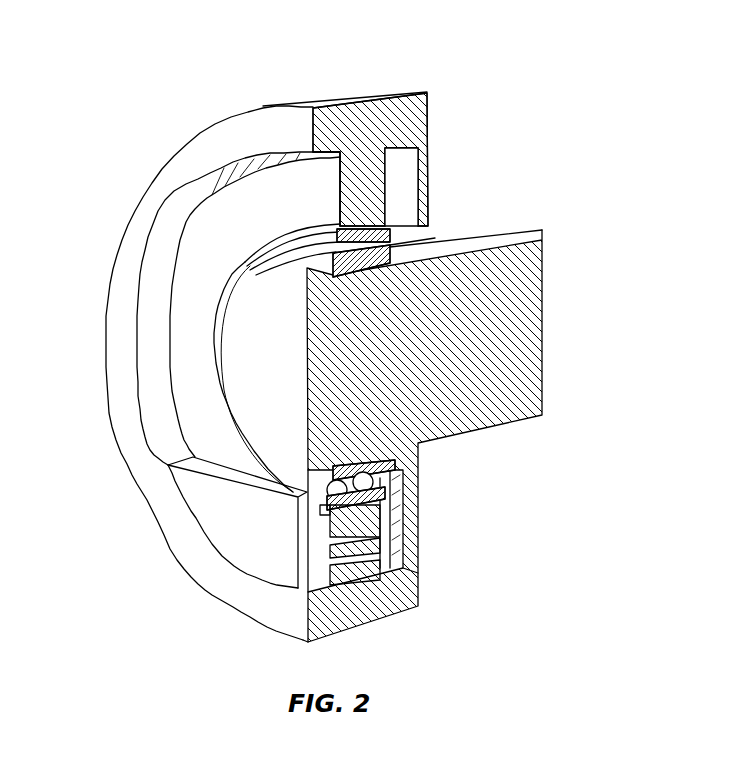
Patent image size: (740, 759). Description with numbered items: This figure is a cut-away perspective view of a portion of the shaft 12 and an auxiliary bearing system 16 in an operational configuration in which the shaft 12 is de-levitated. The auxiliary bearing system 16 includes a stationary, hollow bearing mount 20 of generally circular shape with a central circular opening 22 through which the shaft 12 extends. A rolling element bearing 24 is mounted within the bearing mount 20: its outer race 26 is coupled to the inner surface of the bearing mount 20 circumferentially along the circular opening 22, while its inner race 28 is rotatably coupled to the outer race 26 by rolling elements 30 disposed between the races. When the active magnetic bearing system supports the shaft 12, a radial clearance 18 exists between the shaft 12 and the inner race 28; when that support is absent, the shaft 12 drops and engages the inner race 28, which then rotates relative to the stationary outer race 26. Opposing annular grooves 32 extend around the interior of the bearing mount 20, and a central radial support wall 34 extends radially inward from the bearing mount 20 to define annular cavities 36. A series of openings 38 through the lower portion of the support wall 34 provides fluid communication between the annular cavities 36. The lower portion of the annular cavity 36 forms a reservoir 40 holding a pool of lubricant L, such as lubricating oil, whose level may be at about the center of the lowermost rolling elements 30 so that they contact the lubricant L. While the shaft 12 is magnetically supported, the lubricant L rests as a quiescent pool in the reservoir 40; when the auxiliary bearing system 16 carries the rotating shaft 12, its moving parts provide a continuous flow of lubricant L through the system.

The shaft 12 is at (545, 323).
The auxiliary bearing system 16 is at (565, 68).
The radial clearance 18 is at (365, 262).
The bearing mount 20 is at (250, 108).
The central circular opening 22 is at (278, 238).
The rolling element bearing 24 is at (424, 240).
The outer race 26 is at (382, 490).
The inner race 28 is at (395, 495).
The rolling elements 30 is at (347, 481).
The annular grooves 32 is at (157, 397).
The central radial support wall 34 is at (372, 172).
The annular cavities 36 is at (402, 192).
The openings 38 is at (373, 528).
The reservoir 40 is at (207, 515).
The lubricant L is at (237, 538).